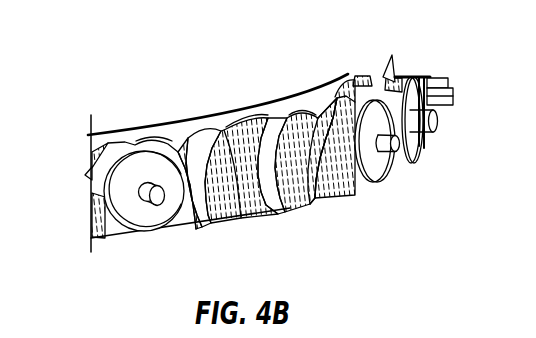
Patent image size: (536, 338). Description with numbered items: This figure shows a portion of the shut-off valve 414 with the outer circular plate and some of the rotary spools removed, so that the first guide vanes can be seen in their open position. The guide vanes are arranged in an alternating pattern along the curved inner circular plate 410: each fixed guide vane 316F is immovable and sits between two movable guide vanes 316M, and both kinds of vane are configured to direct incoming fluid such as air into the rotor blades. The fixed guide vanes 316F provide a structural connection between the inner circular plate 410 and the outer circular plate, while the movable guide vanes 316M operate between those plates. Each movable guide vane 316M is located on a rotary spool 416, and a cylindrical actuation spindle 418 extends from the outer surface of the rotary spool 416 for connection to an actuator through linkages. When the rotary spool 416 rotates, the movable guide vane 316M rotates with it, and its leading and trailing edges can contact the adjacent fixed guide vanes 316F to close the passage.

The shut-off valve 414 is at (115, 61).
The inner circular plate 410 is at (237, 106).
The rotary spool 416 is at (128, 222).
The cylindrical actuation spindle 418 is at (157, 199).
The movable guide vane 316M is at (245, 212).
The fixed guide vane 316F is at (296, 208).